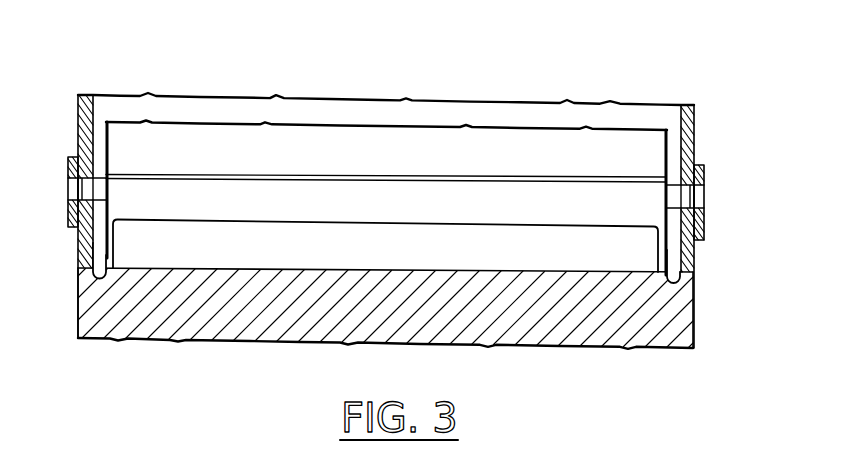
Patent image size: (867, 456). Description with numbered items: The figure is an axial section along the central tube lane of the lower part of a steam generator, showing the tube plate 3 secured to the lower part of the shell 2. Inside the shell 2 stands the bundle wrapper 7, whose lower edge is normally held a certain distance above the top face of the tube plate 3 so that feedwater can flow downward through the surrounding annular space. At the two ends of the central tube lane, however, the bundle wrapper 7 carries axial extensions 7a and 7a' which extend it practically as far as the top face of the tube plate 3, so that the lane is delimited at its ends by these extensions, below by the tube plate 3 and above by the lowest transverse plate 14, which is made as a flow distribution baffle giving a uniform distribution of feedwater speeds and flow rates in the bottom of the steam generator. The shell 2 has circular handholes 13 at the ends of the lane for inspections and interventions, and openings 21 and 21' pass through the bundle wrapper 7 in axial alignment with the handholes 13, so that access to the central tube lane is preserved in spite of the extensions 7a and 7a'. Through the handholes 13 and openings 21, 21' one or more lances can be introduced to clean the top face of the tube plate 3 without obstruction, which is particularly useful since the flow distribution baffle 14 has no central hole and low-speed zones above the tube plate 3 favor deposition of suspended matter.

The shell 2 is at (80, 128).
The tube plate 3 is at (130, 313).
The bundle wrapper 7 is at (386, 185).
The extension of the bundle wrapper 7a is at (66, 269).
The extension of the bundle wrapper 7a' is at (706, 263).
The handhole 13 is at (70, 190).
The transverse plate (flow distribution baffle) 14 is at (570, 178).
The opening 21 is at (59, 211).
The opening 21' is at (716, 194).